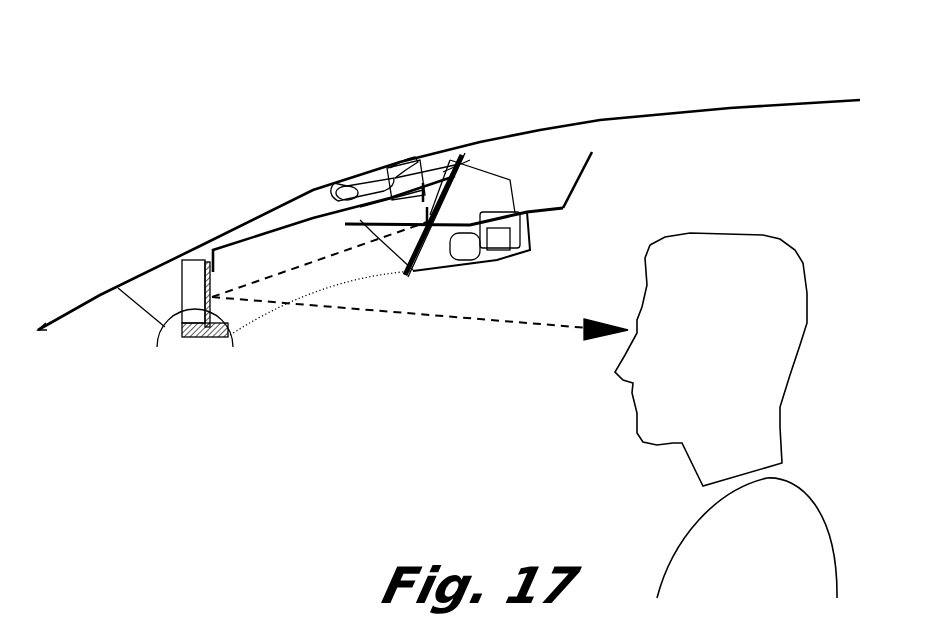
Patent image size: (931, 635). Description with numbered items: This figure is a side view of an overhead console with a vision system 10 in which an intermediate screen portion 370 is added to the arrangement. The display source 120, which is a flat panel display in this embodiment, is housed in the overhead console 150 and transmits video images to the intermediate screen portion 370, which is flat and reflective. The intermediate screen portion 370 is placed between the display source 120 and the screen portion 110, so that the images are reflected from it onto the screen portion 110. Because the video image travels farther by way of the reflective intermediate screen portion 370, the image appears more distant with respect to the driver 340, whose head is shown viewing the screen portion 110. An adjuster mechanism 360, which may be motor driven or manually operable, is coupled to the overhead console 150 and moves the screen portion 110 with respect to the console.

The vision system 10 is at (433, 125).
The display source 120 is at (417, 158).
The intermediate screen portion 370 is at (462, 205).
The overhead console 150 is at (480, 258).
The adjuster mechanism 360 is at (170, 313).
The screen portion 110 is at (230, 328).
The driver 340 is at (781, 427).